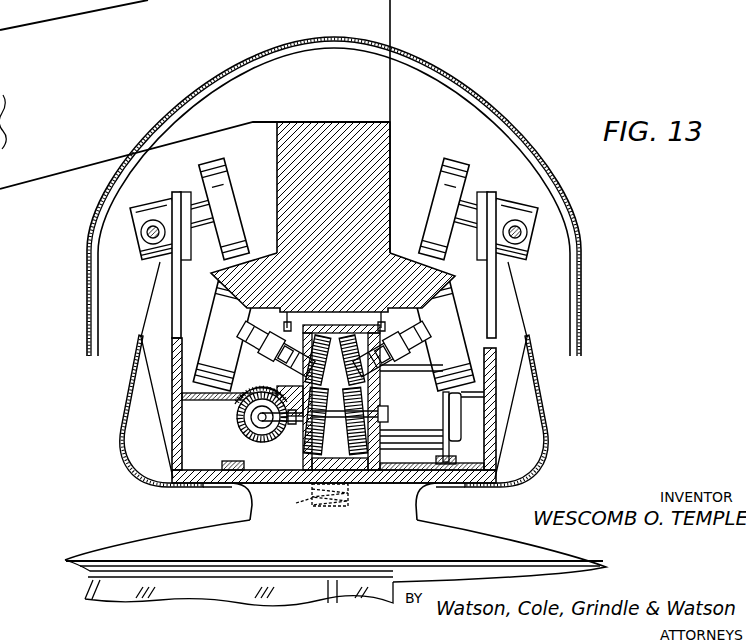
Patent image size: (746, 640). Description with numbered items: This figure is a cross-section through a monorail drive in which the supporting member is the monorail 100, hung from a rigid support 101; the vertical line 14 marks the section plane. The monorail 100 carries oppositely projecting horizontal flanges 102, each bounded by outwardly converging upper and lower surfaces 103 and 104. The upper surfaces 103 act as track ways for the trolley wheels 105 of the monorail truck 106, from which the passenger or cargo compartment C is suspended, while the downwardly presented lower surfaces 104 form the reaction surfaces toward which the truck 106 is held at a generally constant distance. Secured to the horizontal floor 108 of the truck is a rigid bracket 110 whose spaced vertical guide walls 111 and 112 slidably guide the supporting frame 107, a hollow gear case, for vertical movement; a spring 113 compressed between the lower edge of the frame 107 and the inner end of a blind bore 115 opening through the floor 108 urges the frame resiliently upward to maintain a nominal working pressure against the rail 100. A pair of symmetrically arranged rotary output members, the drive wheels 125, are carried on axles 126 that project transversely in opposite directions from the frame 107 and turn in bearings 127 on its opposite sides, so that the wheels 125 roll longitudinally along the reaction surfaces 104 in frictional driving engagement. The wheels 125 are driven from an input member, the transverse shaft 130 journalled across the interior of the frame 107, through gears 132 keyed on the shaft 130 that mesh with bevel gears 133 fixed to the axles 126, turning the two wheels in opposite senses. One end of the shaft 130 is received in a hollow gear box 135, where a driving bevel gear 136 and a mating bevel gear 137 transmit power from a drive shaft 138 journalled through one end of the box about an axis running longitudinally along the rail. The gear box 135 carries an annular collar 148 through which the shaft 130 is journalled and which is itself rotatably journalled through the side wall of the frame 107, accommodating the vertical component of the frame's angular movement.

The partition wall 14 is at (405, 126).
The monorail 100 is at (411, 156).
The rigid support 101 is at (347, 96).
The horizontally projecting flange 102 is at (225, 279).
The upper surface 103 is at (264, 256).
The lower surface 104 is at (270, 300).
The trolley wheel 105 is at (211, 166).
The monorail truck 106 is at (160, 411).
The supporting frame 107 is at (381, 398).
The horizontal floor 108 is at (231, 498).
The rigid bracket 110 is at (230, 465).
The vertical guide wall 111 is at (385, 431).
The vertical guide wall 112 is at (292, 484).
The spring 113 is at (353, 500).
The socket or blind bore 115 is at (296, 503).
The rotary output member 125 is at (227, 313).
The axle 126 is at (281, 367).
The bearing 127 is at (285, 349).
The transverse shaft 130 is at (372, 416).
The gear 132 is at (312, 399).
The bevel gear 133 is at (315, 376).
The gear box 135 is at (240, 418).
The driving bevel gear 136 is at (236, 417).
The bevel gear 137 is at (278, 446).
The drive shaft 138 is at (240, 429).
The annular collar 148 is at (312, 440).
The passenger or cargo compartment C is at (103, 525).